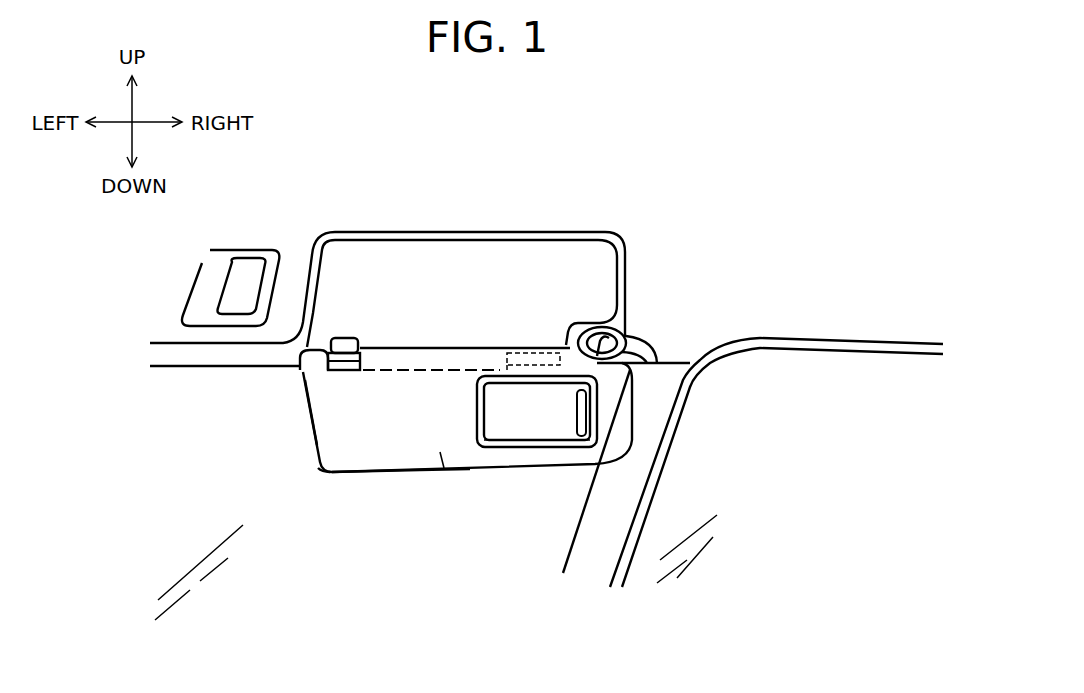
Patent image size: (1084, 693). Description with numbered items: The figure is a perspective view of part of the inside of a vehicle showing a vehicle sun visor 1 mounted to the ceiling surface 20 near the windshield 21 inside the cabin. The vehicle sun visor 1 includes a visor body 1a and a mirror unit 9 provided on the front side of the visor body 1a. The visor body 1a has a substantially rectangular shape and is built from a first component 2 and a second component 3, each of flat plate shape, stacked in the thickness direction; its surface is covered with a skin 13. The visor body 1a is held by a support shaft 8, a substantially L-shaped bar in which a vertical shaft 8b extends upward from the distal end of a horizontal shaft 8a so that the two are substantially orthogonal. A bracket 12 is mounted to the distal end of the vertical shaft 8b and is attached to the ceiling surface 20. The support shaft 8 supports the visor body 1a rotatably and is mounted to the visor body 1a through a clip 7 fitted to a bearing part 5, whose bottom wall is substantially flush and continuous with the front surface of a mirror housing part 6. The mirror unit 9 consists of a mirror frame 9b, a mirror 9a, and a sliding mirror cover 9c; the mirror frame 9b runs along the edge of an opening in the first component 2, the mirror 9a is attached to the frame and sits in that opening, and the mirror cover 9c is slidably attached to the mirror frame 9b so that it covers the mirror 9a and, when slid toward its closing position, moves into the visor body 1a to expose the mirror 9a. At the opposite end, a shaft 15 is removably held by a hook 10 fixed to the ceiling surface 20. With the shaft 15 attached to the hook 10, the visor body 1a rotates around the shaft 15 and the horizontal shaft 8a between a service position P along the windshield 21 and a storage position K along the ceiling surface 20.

The vehicle sun visor 1 is at (338, 528).
The visor body 1a is at (320, 474).
The first component 2 is at (380, 457).
The second component 3 is at (408, 457).
The bearing part 5 is at (533, 377).
The mirror housing part 6 is at (507, 455).
The clip 7 is at (540, 338).
The support shaft 8 is at (614, 367).
The horizontal shaft 8a is at (515, 340).
The vertical shaft 8b is at (618, 353).
The mirror unit 9 is at (483, 457).
The mirror 9a is at (557, 390).
The mirror frame 9b is at (477, 400).
The sliding mirror cover 9c is at (566, 397).
The hook 10 is at (326, 338).
The bracket 12 is at (622, 337).
The skin 13 is at (340, 415).
The shaft 15 is at (360, 345).
The ceiling surface 20 is at (597, 162).
The windshield 21 is at (180, 588).
The storage position K is at (423, 287).
The service position P is at (442, 452).